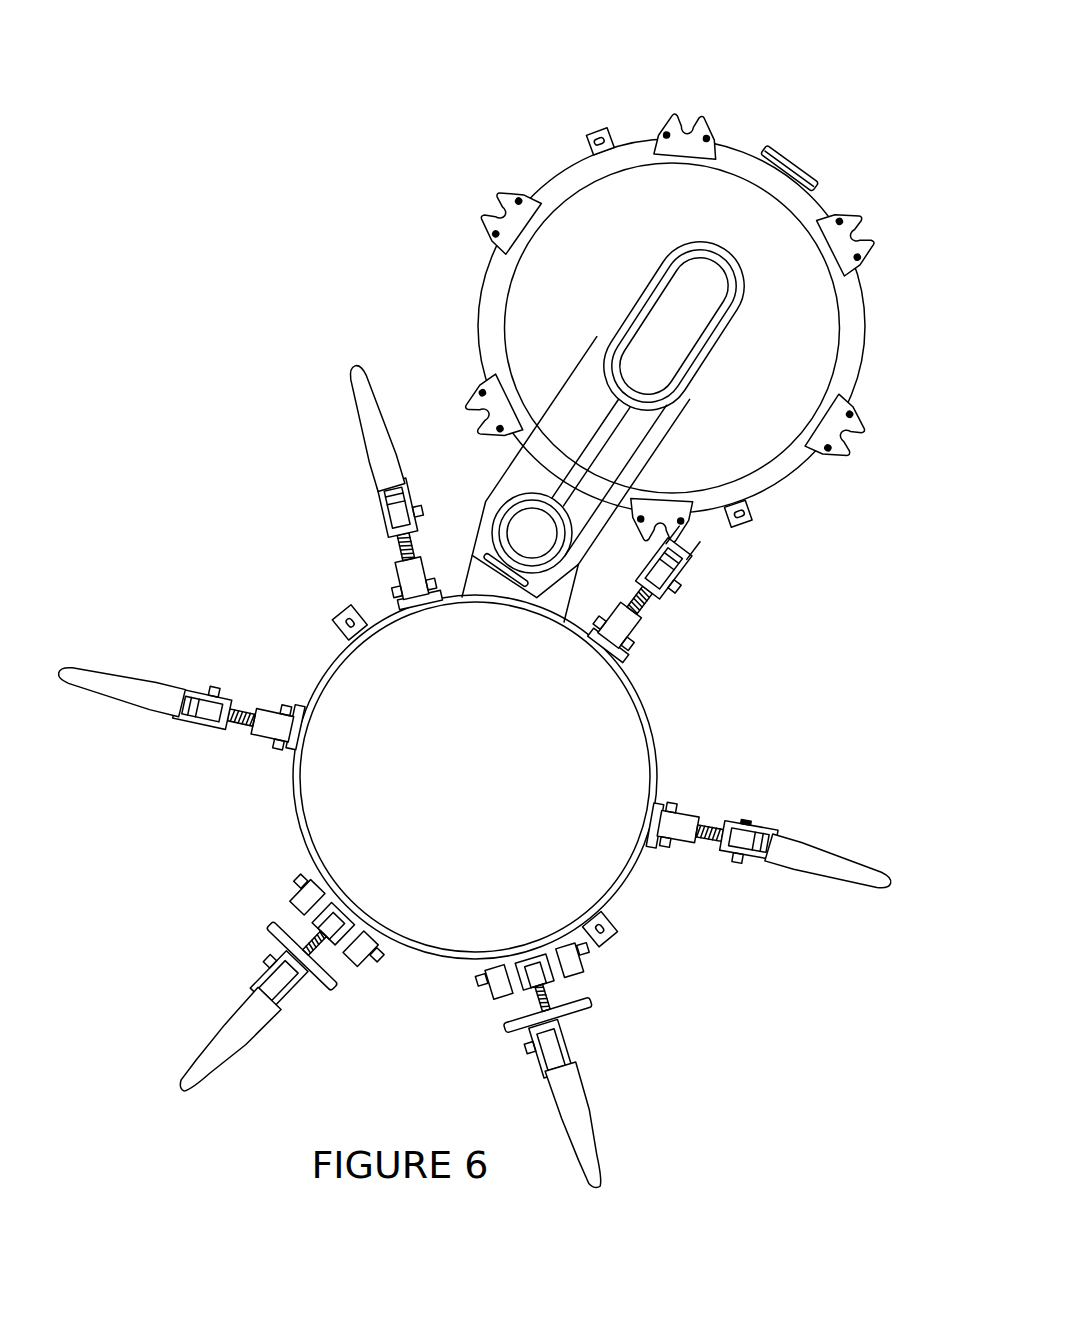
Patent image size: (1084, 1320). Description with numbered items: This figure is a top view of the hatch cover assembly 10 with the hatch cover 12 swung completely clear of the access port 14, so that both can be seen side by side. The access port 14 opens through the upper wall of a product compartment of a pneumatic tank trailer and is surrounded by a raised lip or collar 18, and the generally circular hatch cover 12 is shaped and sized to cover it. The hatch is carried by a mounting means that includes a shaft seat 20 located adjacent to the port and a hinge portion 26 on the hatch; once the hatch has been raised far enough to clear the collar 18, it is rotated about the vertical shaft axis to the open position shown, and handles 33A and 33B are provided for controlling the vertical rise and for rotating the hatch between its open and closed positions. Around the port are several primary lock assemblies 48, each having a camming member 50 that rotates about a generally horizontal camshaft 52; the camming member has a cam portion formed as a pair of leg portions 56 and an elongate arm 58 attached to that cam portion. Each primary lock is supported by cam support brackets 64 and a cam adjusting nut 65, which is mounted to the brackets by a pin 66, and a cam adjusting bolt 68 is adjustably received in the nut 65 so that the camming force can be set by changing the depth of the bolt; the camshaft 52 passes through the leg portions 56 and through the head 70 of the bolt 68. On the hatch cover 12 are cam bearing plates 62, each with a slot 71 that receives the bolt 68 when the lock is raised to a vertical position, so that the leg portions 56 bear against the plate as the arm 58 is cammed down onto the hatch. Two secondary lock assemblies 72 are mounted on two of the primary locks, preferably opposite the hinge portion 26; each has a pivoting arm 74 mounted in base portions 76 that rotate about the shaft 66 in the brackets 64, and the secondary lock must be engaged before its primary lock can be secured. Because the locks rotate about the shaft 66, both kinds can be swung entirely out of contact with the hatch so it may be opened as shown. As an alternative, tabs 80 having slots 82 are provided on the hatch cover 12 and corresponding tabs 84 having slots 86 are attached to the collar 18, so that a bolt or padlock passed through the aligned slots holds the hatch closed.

The hatch cover assembly 10 is at (588, 309).
The hatch cover 12 is at (477, 316).
The access port 14 is at (430, 777).
The raised lip or collar 18 is at (648, 708).
The shaft seat 20 is at (568, 600).
The hinge portion 26 is at (497, 495).
The handle 33A is at (487, 572).
The handle 33B is at (778, 152).
The primary lock assembly 48 is at (806, 835).
The camming member 50 is at (806, 891).
The camshaft 52 is at (212, 690).
The leg portions 56 is at (746, 828).
The elongate arm 58 is at (863, 883).
The cam bearing plate 62 is at (858, 212).
The cam support brackets 64 is at (297, 707).
The cam adjusting nut 65 is at (412, 578).
The pin 66 is at (277, 747).
The cam adjusting bolt 68 is at (400, 550).
The head of bolt 70 is at (400, 513).
The slot 71 is at (687, 100).
The secondary lock assembly 72 is at (258, 947).
The pivoting arm 74 is at (330, 1002).
The base portions 76 is at (295, 900).
The tabs 80 is at (603, 127).
The slots 82 is at (595, 131).
The tabs 84 is at (337, 620).
The slots 86 is at (334, 636).